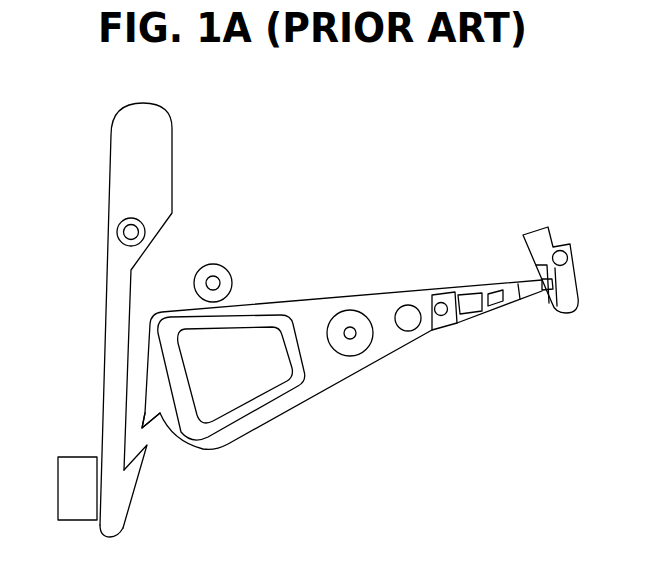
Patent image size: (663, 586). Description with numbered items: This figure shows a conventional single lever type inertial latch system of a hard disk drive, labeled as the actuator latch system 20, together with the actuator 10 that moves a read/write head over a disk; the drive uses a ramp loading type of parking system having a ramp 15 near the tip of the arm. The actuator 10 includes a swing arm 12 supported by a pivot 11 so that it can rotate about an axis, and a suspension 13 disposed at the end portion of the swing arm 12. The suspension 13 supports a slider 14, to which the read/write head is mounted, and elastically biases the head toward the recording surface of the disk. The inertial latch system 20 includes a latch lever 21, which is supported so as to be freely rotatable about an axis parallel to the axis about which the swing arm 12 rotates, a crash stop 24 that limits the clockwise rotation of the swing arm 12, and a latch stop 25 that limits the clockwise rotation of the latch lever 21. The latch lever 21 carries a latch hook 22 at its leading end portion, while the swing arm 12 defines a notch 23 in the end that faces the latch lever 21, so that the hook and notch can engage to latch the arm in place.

The actuator 10 is at (345, 317).
The pivot 11 is at (350, 333).
The swing arm 12 is at (390, 345).
The suspension 13 is at (508, 300).
The slider 14 is at (541, 283).
The ramp 15 is at (578, 285).
The actuator latch system 20 is at (141, 320).
The latch lever 21 is at (115, 295).
The latch hook 22 is at (140, 465).
The notch 23 is at (145, 413).
The crash stop 24 is at (222, 264).
The latch stop 25 is at (72, 457).